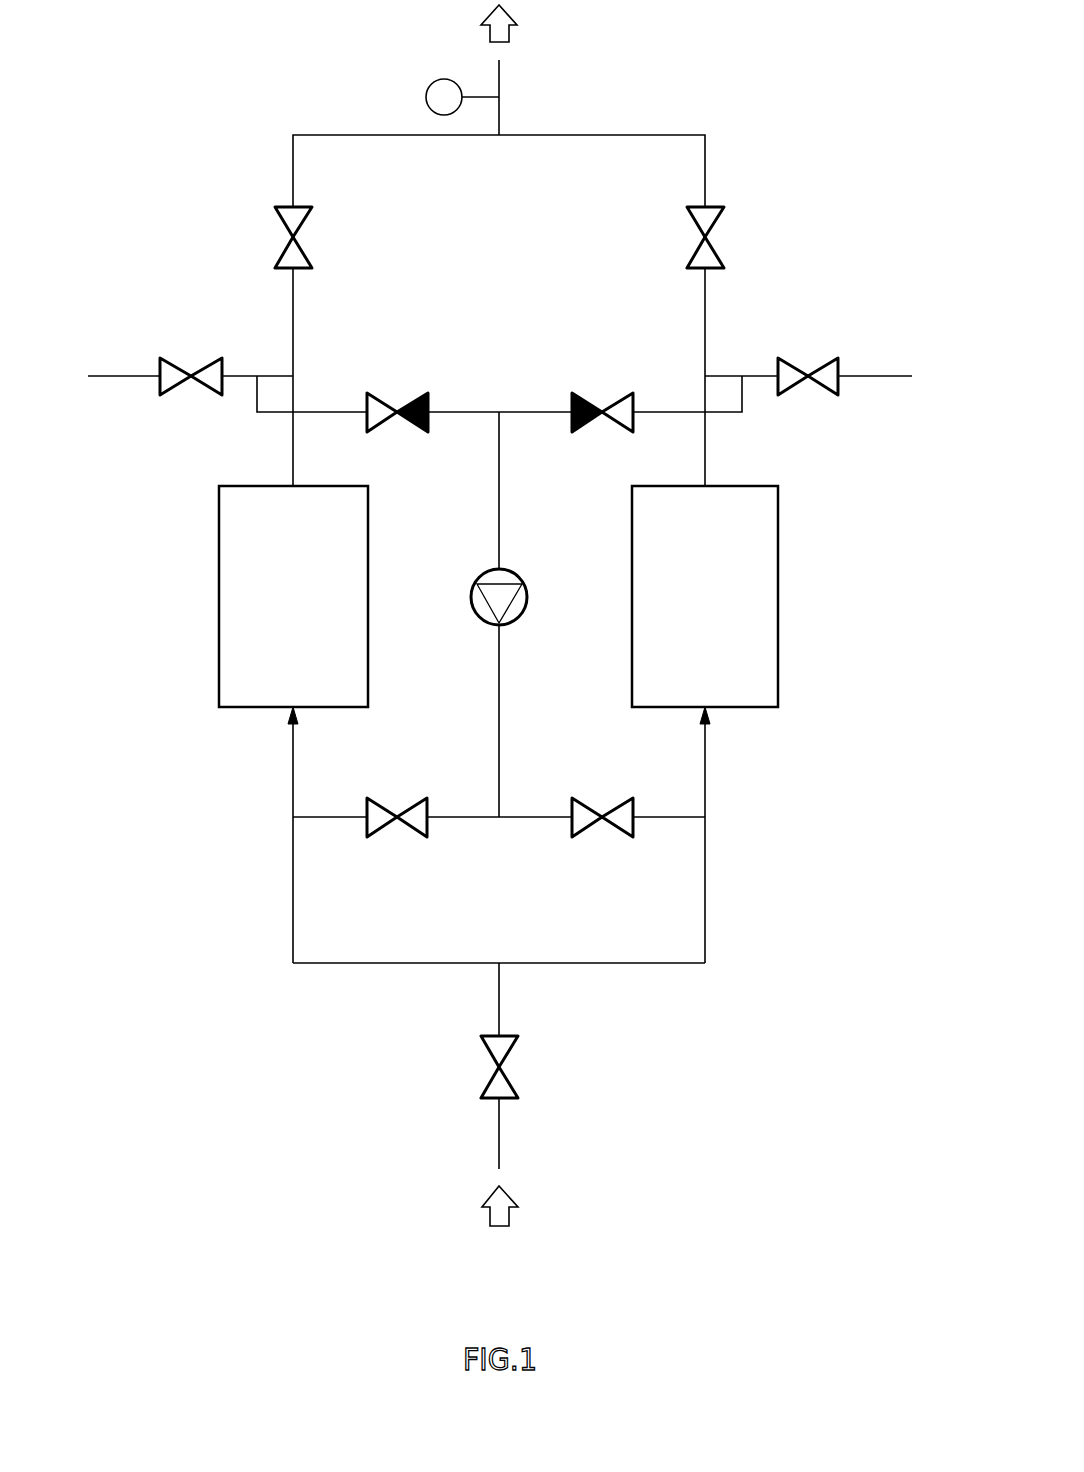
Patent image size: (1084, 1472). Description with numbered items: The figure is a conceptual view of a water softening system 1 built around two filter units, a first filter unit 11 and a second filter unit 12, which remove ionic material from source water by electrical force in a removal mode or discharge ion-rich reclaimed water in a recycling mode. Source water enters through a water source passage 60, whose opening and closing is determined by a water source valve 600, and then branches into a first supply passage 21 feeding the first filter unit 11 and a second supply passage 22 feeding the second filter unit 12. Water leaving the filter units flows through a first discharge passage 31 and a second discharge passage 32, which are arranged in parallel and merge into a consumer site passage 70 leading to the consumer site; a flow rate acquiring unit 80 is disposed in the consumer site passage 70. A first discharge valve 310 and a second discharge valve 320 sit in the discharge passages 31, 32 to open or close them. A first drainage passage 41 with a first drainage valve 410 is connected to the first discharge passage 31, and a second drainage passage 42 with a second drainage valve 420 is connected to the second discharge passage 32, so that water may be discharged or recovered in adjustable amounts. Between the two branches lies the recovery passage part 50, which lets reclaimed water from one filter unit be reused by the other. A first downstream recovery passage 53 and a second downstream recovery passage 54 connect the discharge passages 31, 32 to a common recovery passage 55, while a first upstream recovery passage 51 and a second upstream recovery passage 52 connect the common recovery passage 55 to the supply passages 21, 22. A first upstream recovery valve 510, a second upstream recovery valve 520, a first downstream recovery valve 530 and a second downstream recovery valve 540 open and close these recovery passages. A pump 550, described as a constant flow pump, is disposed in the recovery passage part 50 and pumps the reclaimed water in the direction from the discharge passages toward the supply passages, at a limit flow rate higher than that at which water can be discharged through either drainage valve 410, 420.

The water softening system 1 is at (320, 1133).
The first filter unit 11 is at (210, 595).
The second filter unit 12 is at (787, 595).
The first supply passage 21 is at (303, 918).
The second supply passage 22 is at (692, 918).
The first discharge passage 31 is at (308, 323).
The second discharge passage 32 is at (692, 323).
The first drainage passage 41 is at (122, 313).
The second drainage passage 42 is at (877, 313).
The recovery passage part 50 is at (840, 1145).
The first upstream recovery passage 51 is at (453, 827).
The second upstream recovery passage 52 is at (549, 827).
The first downstream recovery passage 53 is at (437, 430).
The second downstream recovery passage 54 is at (563, 430).
The common recovery passage 55 is at (508, 530).
The water source passage 60 is at (513, 1003).
The consumer site passage 70 is at (513, 85).
The flow rate acquiring unit 80 is at (418, 97).
The first discharge valve 310 is at (322, 237).
The second discharge valve 320 is at (675, 237).
The first drainage valve 410 is at (190, 352).
The second drainage valve 420 is at (808, 352).
The first upstream recovery valve 510 is at (400, 795).
The second upstream recovery valve 520 is at (600, 795).
The first downstream recovery valve 530 is at (400, 385).
The second downstream recovery valve 540 is at (598, 385).
The pump 550 is at (537, 593).
The water source valve 600 is at (521, 1067).